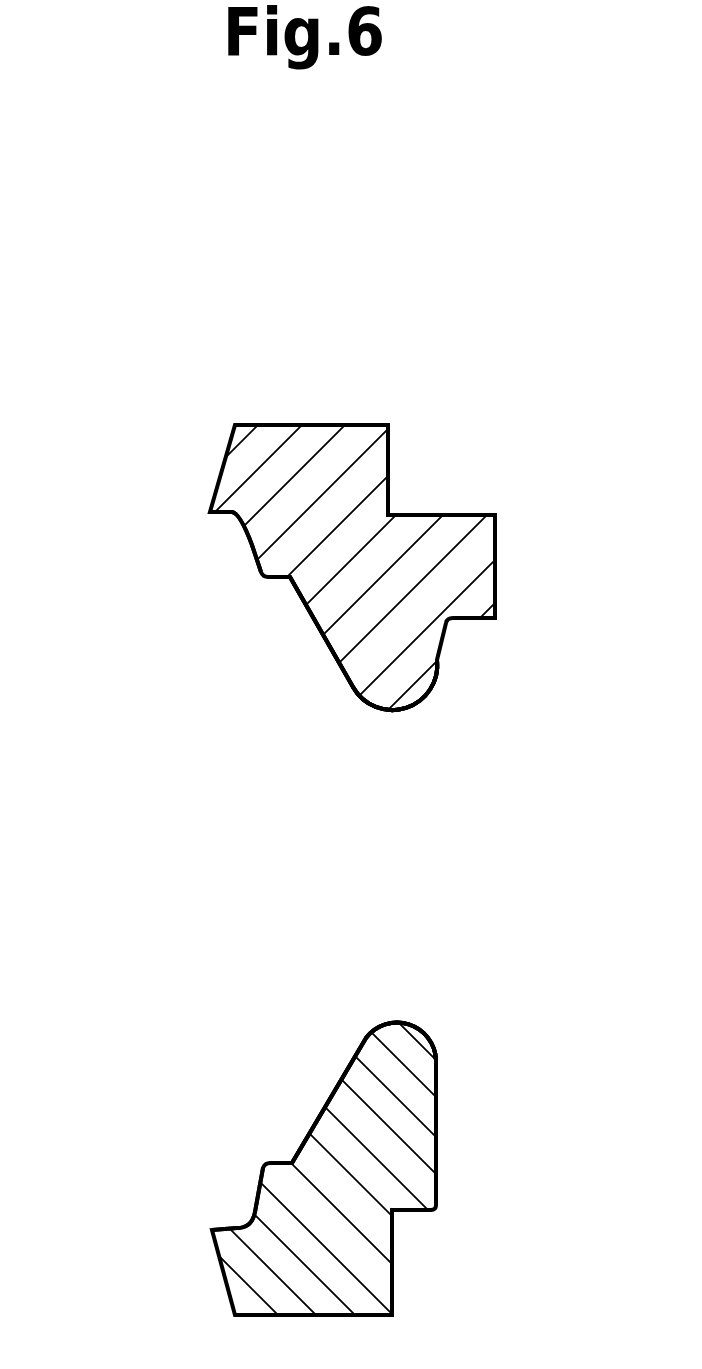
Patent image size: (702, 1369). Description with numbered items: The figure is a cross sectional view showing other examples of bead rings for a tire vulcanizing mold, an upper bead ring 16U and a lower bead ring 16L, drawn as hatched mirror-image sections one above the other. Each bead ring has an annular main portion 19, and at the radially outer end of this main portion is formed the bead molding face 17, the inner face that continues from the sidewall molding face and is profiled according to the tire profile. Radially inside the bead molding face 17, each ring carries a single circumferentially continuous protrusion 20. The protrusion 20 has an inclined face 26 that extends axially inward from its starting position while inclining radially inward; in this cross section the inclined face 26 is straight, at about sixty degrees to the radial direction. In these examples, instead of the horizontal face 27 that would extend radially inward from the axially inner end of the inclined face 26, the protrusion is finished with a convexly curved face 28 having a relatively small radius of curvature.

The upper bead ring 16U is at (478, 477).
The lower bead ring 16L is at (462, 1120).
The bead molding face 17 is at (232, 530).
The annular main portion 19 is at (378, 470).
The protrusion 20 is at (232, 578).
The inclined face 26 is at (348, 683).
The horizontal face 27 is at (395, 860).
The convexly curved face 28 is at (388, 712).